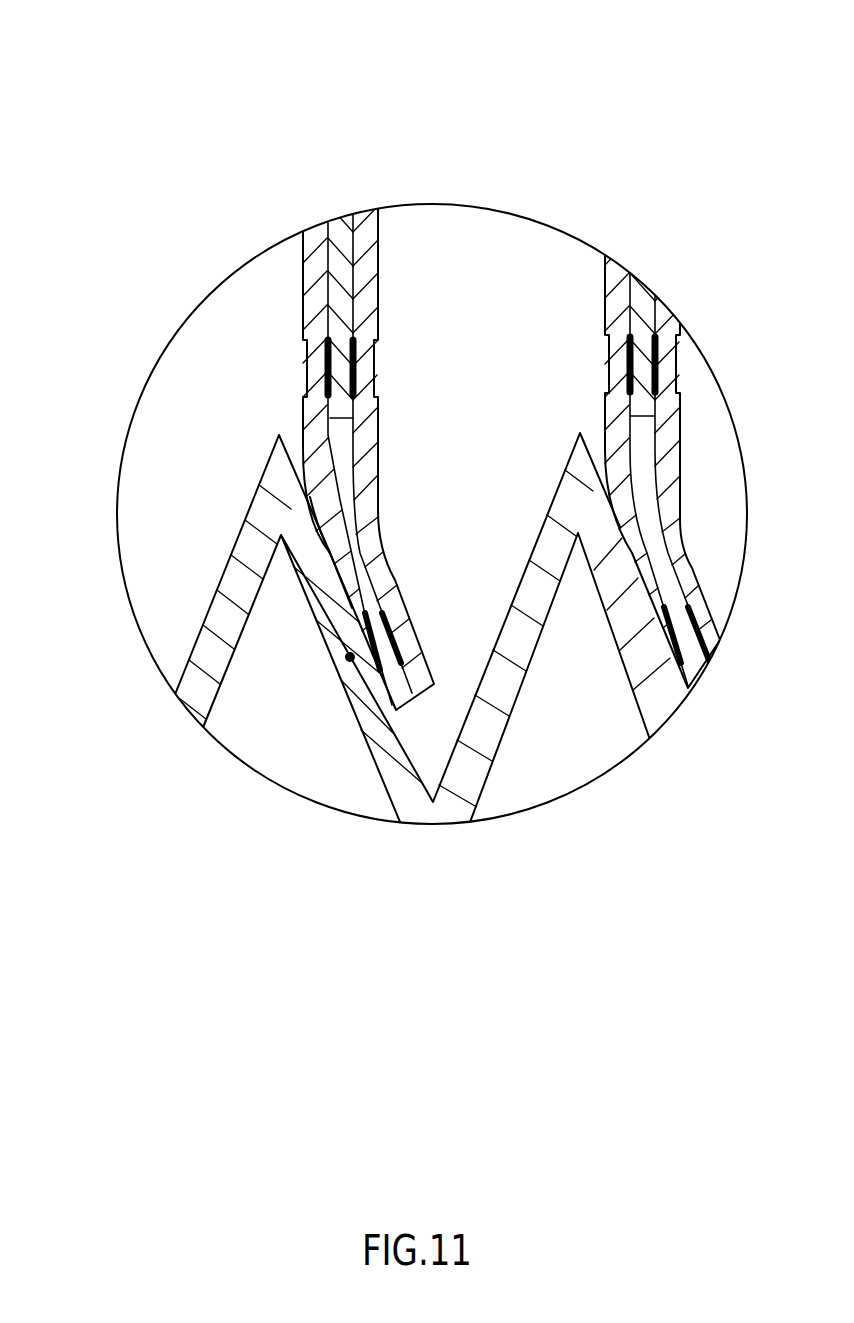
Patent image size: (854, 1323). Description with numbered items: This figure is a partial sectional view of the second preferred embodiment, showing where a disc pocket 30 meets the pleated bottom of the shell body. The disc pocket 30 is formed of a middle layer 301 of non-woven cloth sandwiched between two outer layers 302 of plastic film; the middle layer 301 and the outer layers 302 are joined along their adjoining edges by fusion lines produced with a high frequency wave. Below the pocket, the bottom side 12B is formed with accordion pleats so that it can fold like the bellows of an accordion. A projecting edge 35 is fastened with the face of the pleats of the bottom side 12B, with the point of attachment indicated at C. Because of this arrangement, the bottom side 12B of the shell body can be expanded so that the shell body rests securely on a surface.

The disc pocket 30 is at (466, 359).
The middle layer 301 is at (348, 255).
The outer layer 302 is at (362, 245).
The projecting edge 35 is at (347, 552).
The bottom side 12B is at (407, 713).
The contact point C is at (350, 657).